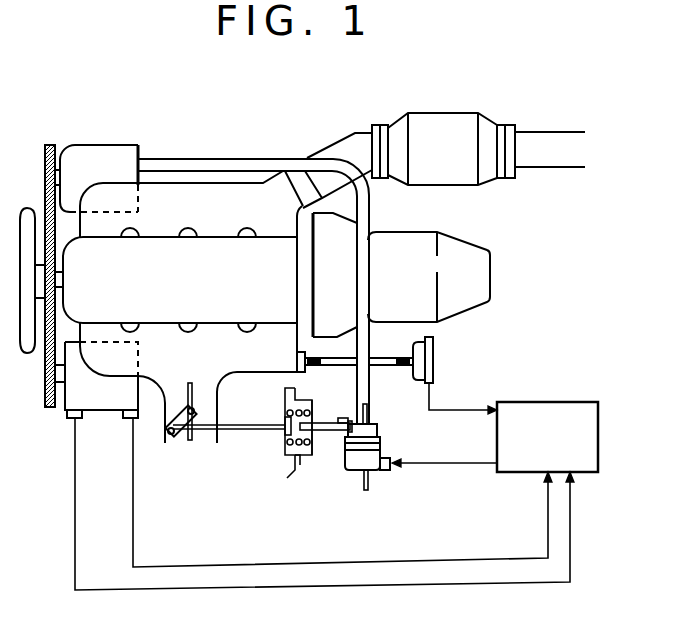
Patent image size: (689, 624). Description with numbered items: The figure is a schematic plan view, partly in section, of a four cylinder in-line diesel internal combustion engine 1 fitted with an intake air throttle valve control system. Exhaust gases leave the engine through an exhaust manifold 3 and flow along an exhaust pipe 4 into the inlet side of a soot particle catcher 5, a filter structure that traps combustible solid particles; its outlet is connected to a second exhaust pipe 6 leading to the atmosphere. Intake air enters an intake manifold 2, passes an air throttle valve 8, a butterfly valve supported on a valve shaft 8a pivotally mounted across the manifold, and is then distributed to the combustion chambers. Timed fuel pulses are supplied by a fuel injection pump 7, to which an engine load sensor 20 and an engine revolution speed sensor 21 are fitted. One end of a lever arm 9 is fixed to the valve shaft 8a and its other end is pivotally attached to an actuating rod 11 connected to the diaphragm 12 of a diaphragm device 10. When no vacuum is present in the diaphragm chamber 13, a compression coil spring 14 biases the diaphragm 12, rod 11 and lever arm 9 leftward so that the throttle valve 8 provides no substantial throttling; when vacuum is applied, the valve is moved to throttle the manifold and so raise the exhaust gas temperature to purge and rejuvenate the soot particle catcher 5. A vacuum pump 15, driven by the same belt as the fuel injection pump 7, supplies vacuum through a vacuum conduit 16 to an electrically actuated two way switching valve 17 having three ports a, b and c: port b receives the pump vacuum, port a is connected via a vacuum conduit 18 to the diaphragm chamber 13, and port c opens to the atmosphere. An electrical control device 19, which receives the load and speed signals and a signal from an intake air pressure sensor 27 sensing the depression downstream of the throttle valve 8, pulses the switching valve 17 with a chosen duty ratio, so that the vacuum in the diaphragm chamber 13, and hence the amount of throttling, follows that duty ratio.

The diesel internal combustion engine 1 is at (178, 289).
The intake manifold 2 is at (262, 357).
The exhaust manifold 3 is at (217, 198).
The exhaust pipe 4 is at (350, 135).
The soot particle catcher 5 is at (445, 128).
The second exhaust pipe 6 is at (580, 138).
The fuel injection pump 7 is at (100, 400).
The air throttle valve 8 is at (196, 385).
The valve shaft 8a is at (185, 410).
The lever arm 9 is at (172, 420).
The diaphragm device 10 is at (285, 464).
The actuating rod 11 is at (237, 422).
The diaphragm 12 is at (283, 440).
The diaphragm chamber 13 is at (312, 432).
The compression coil spring 14 is at (300, 452).
The vacuum pump 15 is at (100, 157).
The vacuum conduit 16 is at (369, 206).
The electrically actuated two way switching valve 17 is at (378, 444).
The vacuum conduit 18 is at (325, 412).
The electrical control device 19 is at (600, 423).
The engine load sensor 20 is at (127, 420).
The engine revolution speed sensor 21 is at (68, 420).
The intake air pressure sensor 27 is at (432, 362).
The port a is at (343, 419).
The port b is at (368, 418).
The port c is at (368, 486).